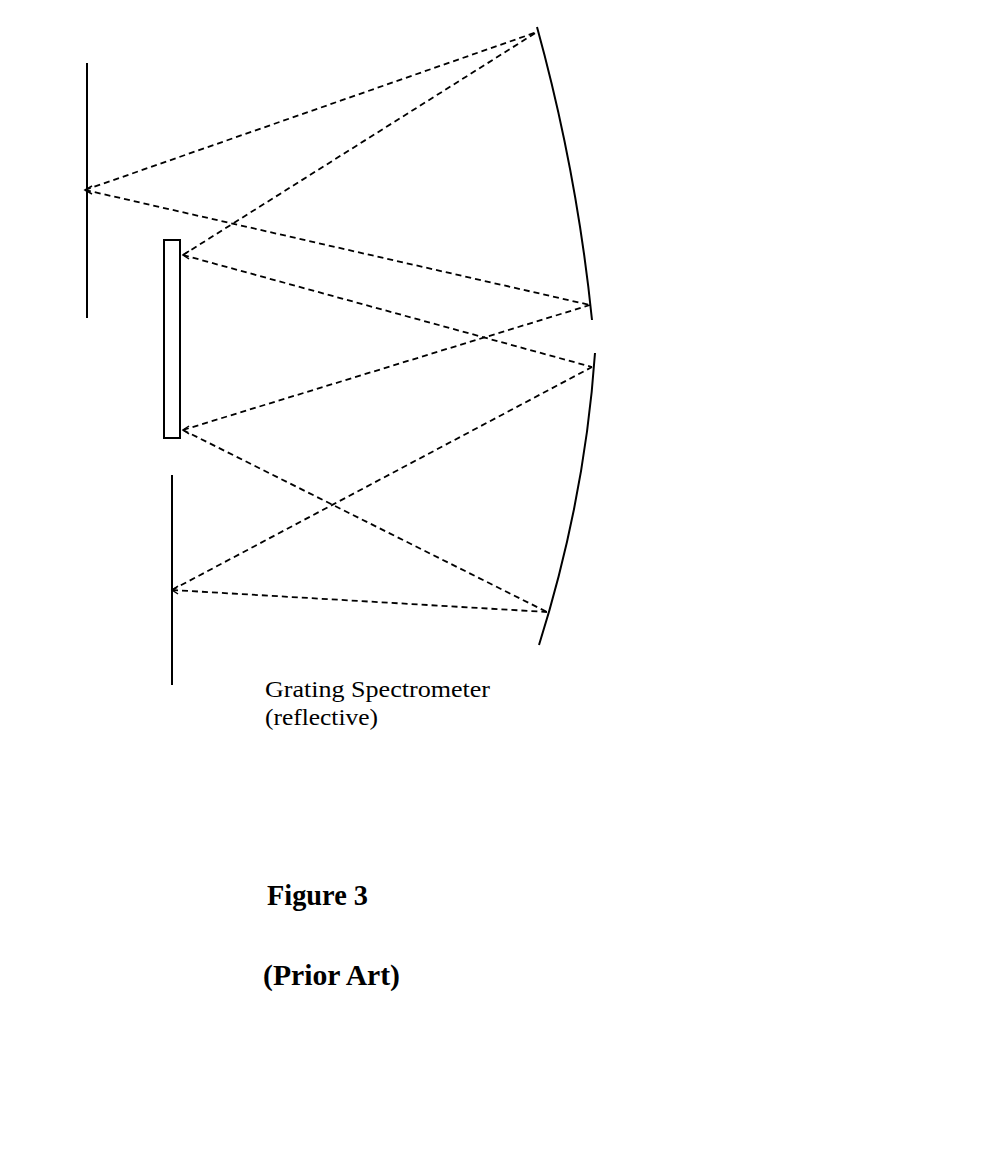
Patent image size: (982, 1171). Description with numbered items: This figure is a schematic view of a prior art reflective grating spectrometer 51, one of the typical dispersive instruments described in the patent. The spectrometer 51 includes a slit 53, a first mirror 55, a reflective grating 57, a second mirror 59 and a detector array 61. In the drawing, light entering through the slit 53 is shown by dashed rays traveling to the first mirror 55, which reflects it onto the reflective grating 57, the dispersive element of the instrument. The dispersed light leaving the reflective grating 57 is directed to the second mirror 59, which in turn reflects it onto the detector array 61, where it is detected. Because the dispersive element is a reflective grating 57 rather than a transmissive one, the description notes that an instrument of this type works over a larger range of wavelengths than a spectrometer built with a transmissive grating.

The spectrometer 51 is at (698, 248).
The slit 53 is at (90, 90).
The first mirror 55 is at (555, 86).
The reflective grating 57 is at (183, 340).
The second mirror 59 is at (588, 433).
The detector array 61 is at (168, 676).